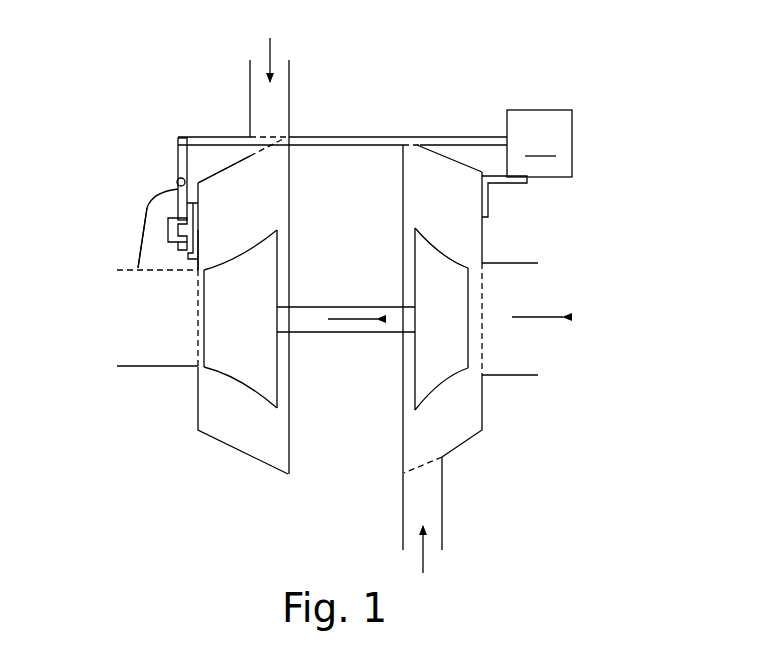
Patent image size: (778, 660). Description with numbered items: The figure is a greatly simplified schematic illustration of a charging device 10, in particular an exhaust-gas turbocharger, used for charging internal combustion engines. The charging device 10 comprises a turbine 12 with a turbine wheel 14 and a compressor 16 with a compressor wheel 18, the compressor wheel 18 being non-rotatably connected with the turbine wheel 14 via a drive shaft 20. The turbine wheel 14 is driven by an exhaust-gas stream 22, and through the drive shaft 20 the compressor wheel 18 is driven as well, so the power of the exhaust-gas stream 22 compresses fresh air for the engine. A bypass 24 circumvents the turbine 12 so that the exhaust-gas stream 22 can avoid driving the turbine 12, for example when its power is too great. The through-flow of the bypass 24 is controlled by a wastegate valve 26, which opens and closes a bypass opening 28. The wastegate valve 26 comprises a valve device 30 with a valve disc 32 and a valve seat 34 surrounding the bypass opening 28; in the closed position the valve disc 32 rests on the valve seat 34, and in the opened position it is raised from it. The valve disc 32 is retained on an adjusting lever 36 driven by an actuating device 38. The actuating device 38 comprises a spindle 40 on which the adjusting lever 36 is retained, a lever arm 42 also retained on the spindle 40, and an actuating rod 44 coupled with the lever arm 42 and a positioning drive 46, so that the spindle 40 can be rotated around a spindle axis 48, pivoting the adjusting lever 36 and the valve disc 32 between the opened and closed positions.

The charging device 10 is at (433, 111).
The turbine 12 is at (205, 420).
The turbine wheel 14 is at (215, 363).
The compressor 16 is at (475, 430).
The compressor wheel 18 is at (458, 363).
The drive shaft 20 is at (323, 333).
The exhaust-gas stream 22 is at (270, 53).
The bypass 24 is at (158, 255).
The wastegate valve 26 is at (156, 164).
The bypass opening 28 is at (219, 201).
The valve device 30 is at (122, 198).
The valve disc 32 is at (173, 230).
The valve seat 34 is at (217, 236).
The adjusting lever 36 is at (180, 198).
The actuating device 38 is at (553, 105).
The spindle 40 is at (193, 128).
The lever arm 42 is at (177, 150).
The actuating rod 44 is at (355, 137).
The positioning drive 46 is at (540, 144).
The spindle axis 48 is at (184, 178).